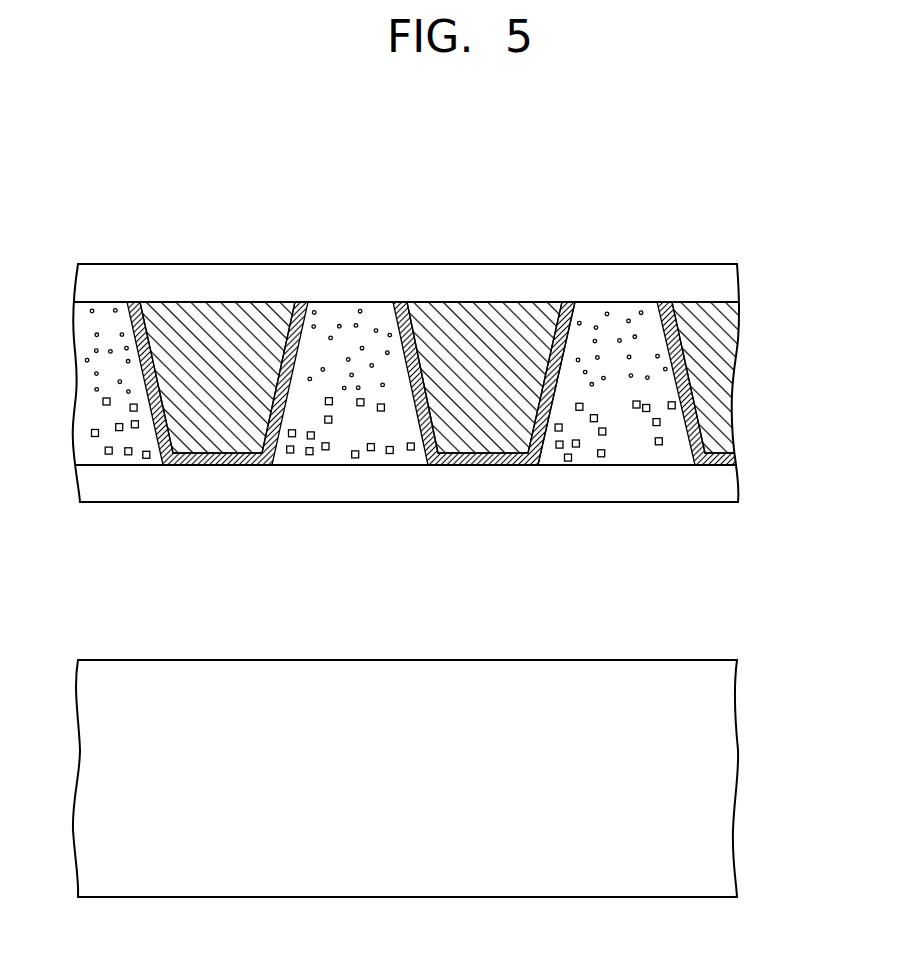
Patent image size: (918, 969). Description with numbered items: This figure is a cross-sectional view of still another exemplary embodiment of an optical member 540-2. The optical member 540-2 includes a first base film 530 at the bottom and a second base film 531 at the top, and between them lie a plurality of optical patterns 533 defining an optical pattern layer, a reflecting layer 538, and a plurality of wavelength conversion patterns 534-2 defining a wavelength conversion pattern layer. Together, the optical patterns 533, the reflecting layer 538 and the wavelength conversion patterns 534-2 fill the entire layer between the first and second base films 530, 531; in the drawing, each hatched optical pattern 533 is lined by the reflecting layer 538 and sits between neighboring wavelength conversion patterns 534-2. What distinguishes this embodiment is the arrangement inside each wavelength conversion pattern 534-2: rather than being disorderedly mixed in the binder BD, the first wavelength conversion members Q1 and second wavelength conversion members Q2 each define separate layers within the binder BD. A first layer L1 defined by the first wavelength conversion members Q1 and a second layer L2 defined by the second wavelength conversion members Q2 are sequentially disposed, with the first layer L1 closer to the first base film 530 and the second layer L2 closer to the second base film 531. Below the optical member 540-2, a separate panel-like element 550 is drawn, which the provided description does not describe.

The second base film 531 is at (727, 285).
The optical pattern 533 is at (727, 385).
The reflecting layer 538 is at (730, 459).
The first base film 530 is at (727, 487).
The optical member 540-2 is at (822, 275).
The wavelength conversion pattern 534-2 is at (344, 301).
The first wavelength conversion member Q1 is at (641, 402).
The second wavelength conversion member Q2 is at (606, 311).
The binder BD is at (583, 303).
The first layer L1 is at (60, 395).
The second layer L2 is at (60, 302).
The display panel 550 is at (725, 777).